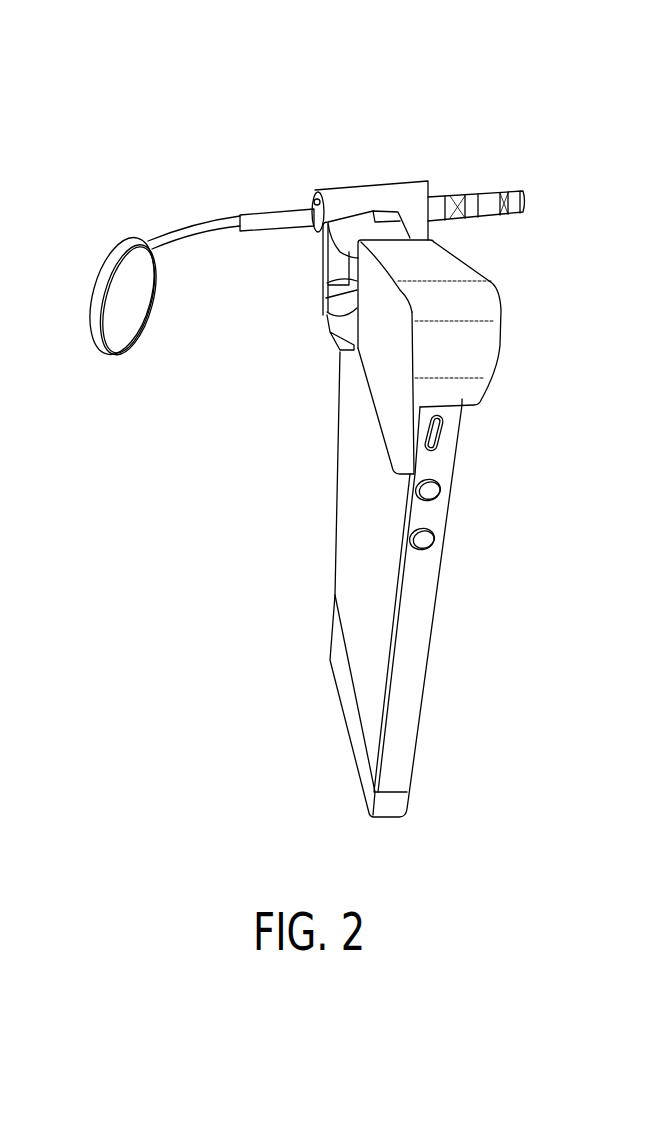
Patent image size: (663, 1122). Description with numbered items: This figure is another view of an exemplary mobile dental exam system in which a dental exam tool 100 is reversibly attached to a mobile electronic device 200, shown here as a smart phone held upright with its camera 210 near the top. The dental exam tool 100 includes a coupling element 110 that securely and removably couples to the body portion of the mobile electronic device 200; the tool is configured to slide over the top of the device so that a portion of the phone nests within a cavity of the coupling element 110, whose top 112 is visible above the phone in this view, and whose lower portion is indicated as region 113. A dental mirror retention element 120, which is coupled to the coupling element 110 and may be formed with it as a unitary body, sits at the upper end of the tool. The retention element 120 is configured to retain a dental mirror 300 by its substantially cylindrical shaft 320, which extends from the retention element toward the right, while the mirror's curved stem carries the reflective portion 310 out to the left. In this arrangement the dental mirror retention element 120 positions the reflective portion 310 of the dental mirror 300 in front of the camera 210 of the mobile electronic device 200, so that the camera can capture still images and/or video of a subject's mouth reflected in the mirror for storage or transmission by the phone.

The dental exam tool 100 is at (266, 82).
The coupling element 110 is at (455, 300).
The top 112 is at (442, 263).
The lower portion of housing 113 is at (455, 362).
The dental mirror retention element 120 is at (395, 208).
The mobile electronic device 200 is at (418, 613).
The camera 210 is at (352, 283).
The dental mirror 300 is at (185, 225).
The reflective portion 310 is at (107, 313).
The substantially cylindrical shaft 320 is at (473, 192).